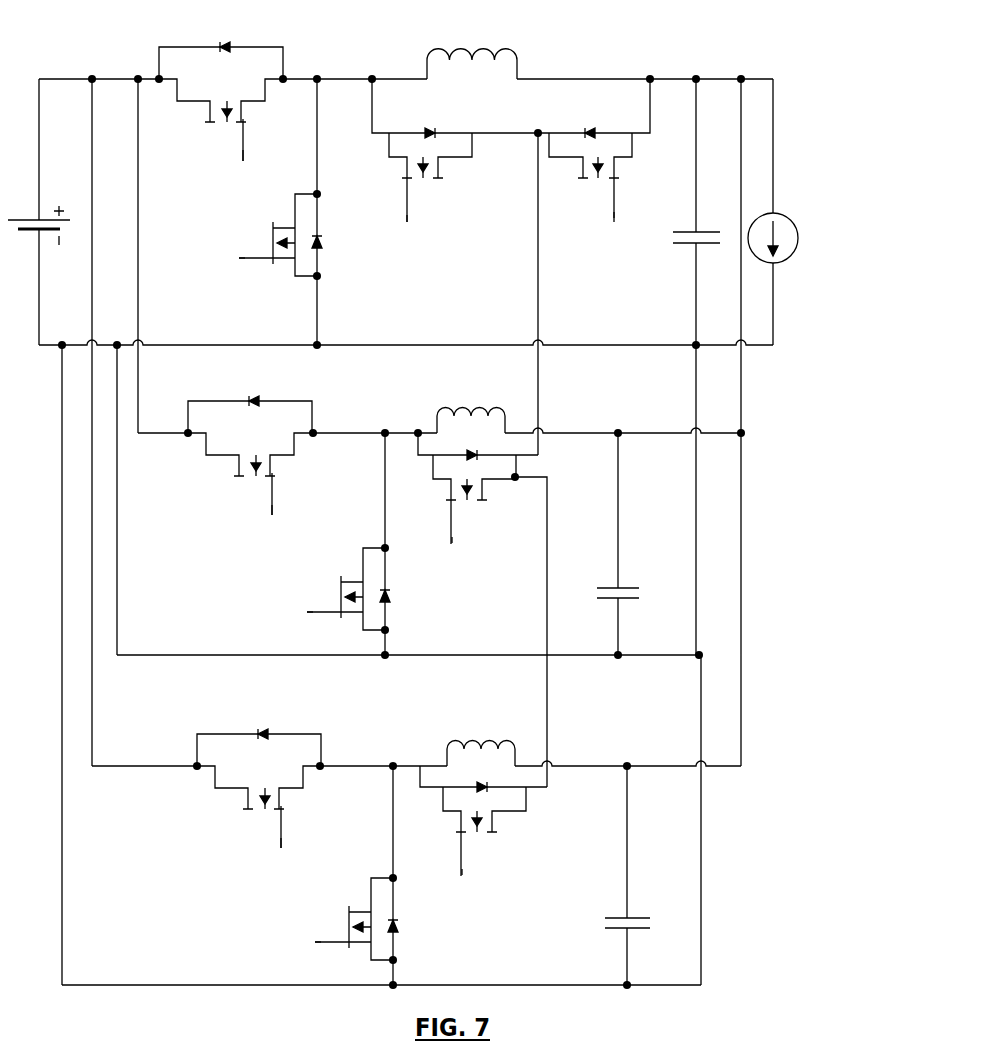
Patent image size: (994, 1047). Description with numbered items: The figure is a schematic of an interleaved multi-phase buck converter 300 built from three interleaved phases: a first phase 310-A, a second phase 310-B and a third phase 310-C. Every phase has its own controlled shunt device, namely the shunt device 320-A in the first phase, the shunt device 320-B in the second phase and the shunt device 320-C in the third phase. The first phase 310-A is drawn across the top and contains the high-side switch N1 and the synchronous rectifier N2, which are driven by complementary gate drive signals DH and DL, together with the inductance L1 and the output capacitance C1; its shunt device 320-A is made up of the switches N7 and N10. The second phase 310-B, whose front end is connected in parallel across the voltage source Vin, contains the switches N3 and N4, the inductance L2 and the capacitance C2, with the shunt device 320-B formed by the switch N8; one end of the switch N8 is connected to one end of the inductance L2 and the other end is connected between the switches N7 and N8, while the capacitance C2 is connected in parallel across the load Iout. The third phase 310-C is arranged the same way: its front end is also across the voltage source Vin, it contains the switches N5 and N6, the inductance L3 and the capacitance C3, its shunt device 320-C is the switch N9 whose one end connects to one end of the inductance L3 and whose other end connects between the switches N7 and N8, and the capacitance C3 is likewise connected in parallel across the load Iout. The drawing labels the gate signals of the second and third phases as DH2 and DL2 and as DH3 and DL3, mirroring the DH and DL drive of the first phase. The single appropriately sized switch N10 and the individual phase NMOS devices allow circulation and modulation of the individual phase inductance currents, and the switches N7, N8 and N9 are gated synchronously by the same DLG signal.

The interleaved multi-phase buck converter 300 is at (783, 51).
The first phase 310-A is at (114, 70).
The second phase 310-B is at (587, 409).
The third phase 310-C is at (599, 732).
The controlled shunt device 320-A is at (507, 160).
The controlled shunt device 320-B is at (486, 556).
The controlled shunt device 320-C is at (498, 861).
The high-side switch N1 is at (233, 106).
The synchronous rectifier N2 is at (286, 212).
The switch N3 is at (240, 460).
The switch N4 is at (341, 544).
The switch N5 is at (248, 796).
The switch N6 is at (356, 875).
The switch N7 is at (457, 150).
The switch N8 is at (482, 610).
The switch N9 is at (483, 821).
The switch N10 is at (603, 150).
The inductance L1 is at (472, 48).
The inductance L2 is at (471, 407).
The inductance L3 is at (481, 739).
The output capacitance C1 is at (700, 251).
The capacitance C2 is at (613, 544).
The capacitance C3 is at (620, 875).
The gate drive signal DH is at (242, 168).
The high-side drive signal of second stage DH2 is at (276, 522).
The high-side drive signal of third stage DH3 is at (284, 858).
The gate drive signal DL is at (226, 259).
The low-side drive signal of second stage DL2 is at (286, 611).
The low-side drive signal of third stage DL3 is at (295, 945).
The DLG signal DLG is at (514, 556).
The voltage source Vin is at (42, 212).
The load Iout is at (778, 212).